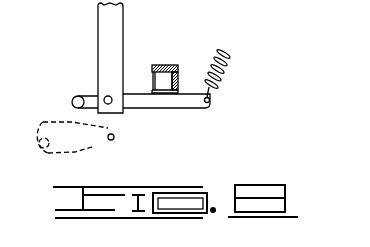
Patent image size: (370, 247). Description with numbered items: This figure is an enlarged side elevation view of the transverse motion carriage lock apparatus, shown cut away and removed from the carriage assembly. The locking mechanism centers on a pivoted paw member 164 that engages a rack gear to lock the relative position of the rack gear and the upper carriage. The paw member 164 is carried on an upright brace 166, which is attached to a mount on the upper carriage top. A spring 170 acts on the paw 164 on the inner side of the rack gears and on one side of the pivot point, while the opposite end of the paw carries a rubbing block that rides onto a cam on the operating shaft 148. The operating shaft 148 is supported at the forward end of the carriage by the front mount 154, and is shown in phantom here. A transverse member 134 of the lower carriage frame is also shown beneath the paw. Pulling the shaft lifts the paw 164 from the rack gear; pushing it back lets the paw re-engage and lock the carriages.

The upright brace 166 is at (102, 16).
The pivoted paw member 164 is at (188, 108).
The transverse member 134 is at (164, 65).
The front mount 154 is at (153, 80).
The spring 170 is at (228, 62).
The operating shaft 148 is at (100, 144).